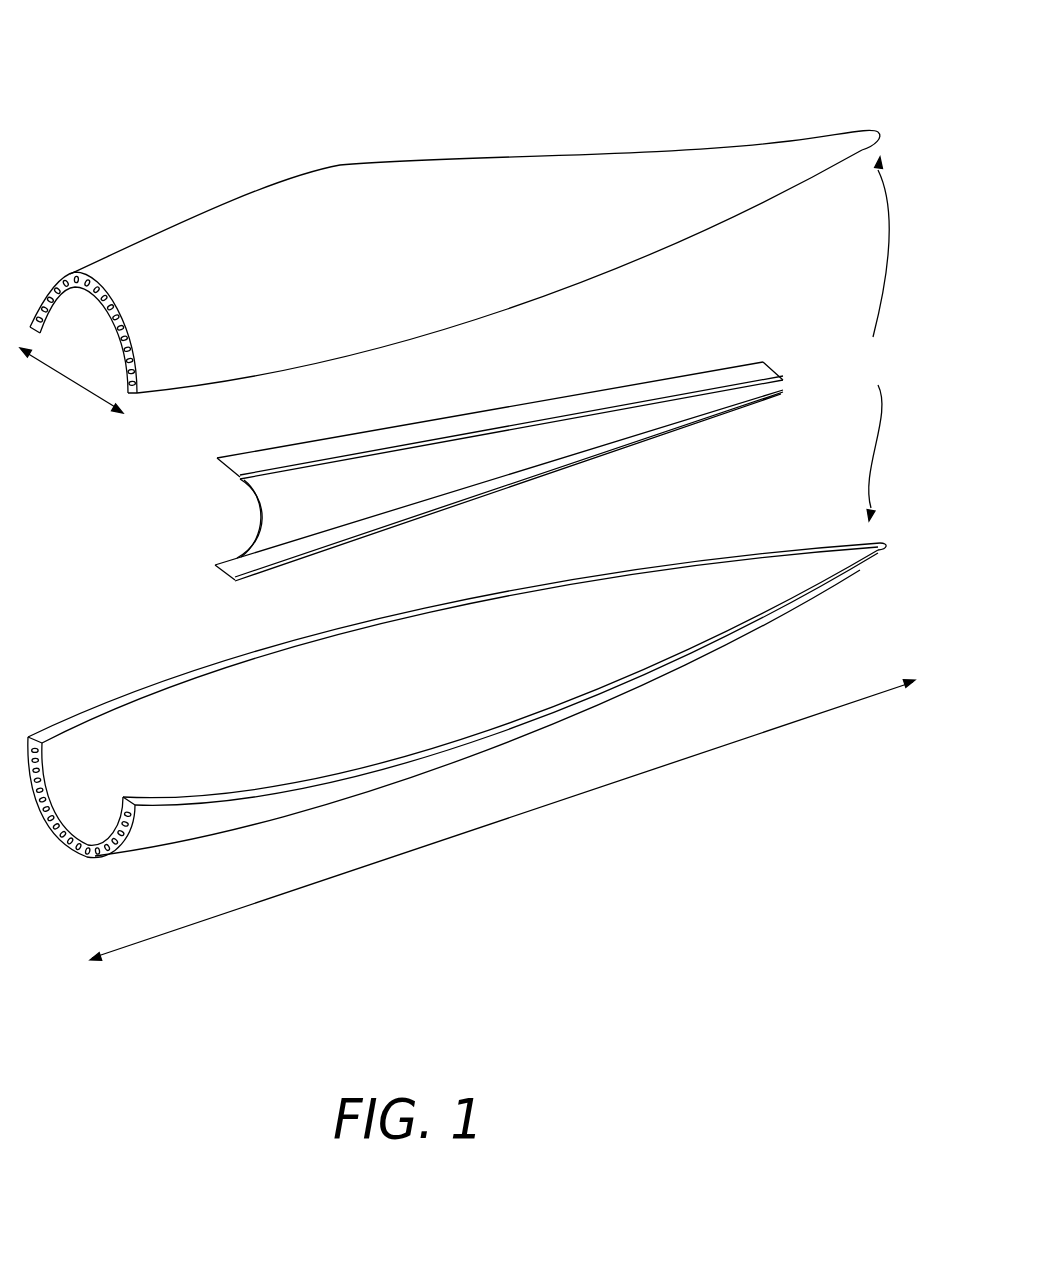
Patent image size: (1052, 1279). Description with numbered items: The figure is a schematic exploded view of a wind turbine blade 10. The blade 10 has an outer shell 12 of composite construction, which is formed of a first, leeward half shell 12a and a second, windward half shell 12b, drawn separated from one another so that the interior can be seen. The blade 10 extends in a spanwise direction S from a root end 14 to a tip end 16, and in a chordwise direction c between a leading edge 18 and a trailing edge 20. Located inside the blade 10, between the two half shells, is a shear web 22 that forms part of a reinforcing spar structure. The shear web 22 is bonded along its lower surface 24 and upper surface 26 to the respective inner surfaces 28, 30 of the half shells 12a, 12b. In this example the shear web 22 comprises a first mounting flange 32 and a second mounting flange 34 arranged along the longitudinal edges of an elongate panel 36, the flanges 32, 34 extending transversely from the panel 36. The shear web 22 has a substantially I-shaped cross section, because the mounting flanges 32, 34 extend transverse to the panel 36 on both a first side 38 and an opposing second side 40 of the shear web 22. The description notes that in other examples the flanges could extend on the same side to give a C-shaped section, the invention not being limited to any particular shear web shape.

The wind turbine blade 10 is at (168, 70).
The outer shell 12 is at (525, 135).
The first half shell 12a is at (310, 800).
The second half shell 12b is at (634, 170).
The root end 14 is at (148, 420).
The tip end 16 is at (876, 339).
The leading edge 18 is at (549, 290).
The trailing edge 20 is at (332, 155).
The shear web 22 is at (237, 524).
The lower surface 24 is at (572, 482).
The upper surface 26 is at (493, 404).
The inner surface 28 is at (380, 695).
The inner surface 30 is at (65, 302).
The first mounting flange 32 is at (390, 523).
The second mounting flange 34 is at (360, 436).
The elongate panel 36 is at (317, 513).
The first side 38 is at (303, 540).
The second side 40 is at (209, 483).
The chordwise direction c is at (71, 381).
The spanwise direction S is at (502, 820).